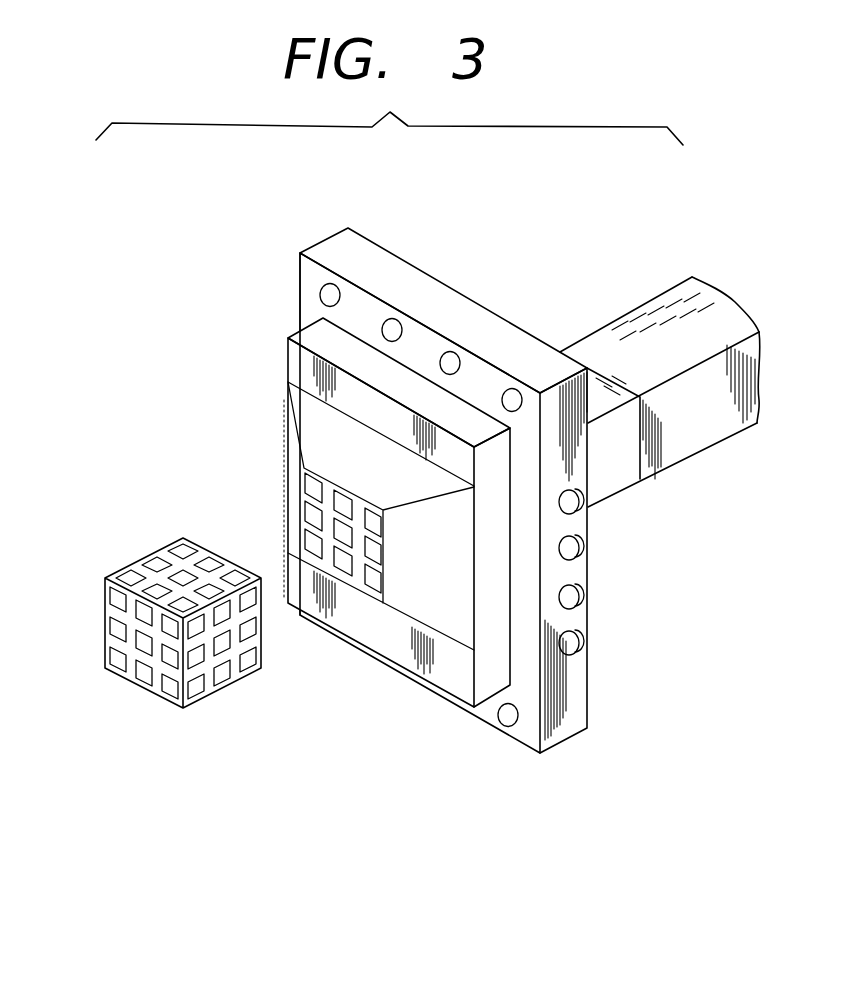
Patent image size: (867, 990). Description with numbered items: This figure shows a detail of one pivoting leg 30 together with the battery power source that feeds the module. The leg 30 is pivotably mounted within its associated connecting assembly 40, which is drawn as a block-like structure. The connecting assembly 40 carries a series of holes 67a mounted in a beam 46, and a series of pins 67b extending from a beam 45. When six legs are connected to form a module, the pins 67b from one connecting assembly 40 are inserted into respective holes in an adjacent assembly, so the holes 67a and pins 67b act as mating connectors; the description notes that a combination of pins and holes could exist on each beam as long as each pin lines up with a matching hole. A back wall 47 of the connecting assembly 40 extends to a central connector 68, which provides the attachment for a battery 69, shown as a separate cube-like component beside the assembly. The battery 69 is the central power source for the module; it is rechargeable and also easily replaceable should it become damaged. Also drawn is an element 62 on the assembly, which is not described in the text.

The leg 30 is at (660, 360).
The beam 46 is at (493, 332).
The back wall 47 is at (440, 610).
The holes 67a is at (392, 318).
The pins 67b is at (579, 501).
The connecting assembly 40 is at (588, 564).
The beam 45 is at (580, 617).
The support arm 62 is at (663, 432).
The central connector 68 is at (308, 530).
The battery 69 is at (117, 673).